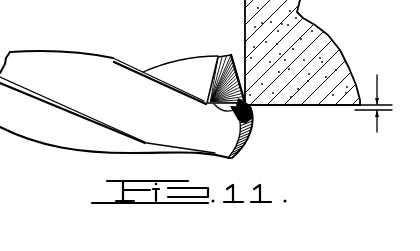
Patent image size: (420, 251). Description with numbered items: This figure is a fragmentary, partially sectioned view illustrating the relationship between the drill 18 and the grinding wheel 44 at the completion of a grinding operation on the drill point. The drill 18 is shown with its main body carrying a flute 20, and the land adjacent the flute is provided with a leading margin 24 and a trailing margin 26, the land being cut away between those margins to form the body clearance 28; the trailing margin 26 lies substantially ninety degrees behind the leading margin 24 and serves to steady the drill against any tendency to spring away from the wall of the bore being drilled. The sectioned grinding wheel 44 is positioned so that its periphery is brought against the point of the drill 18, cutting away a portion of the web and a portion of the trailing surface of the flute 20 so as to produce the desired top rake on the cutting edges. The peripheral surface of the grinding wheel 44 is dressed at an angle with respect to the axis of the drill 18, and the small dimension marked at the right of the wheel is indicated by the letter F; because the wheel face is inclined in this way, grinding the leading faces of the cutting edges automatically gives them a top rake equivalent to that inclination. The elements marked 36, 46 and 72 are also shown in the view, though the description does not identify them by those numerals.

The drill 18 is at (60, 47).
The flute 20 is at (150, 143).
The leading margin 24 is at (119, 59).
The trailing margin 26 is at (98, 121).
The body clearance 28 is at (190, 83).
The bevel face 36 is at (215, 106).
The grinding wheel 44 is at (303, 16).
The element 46 is at (29, 4).
The element 72 is at (152, 2).
The clearance dimension F is at (375, 112).